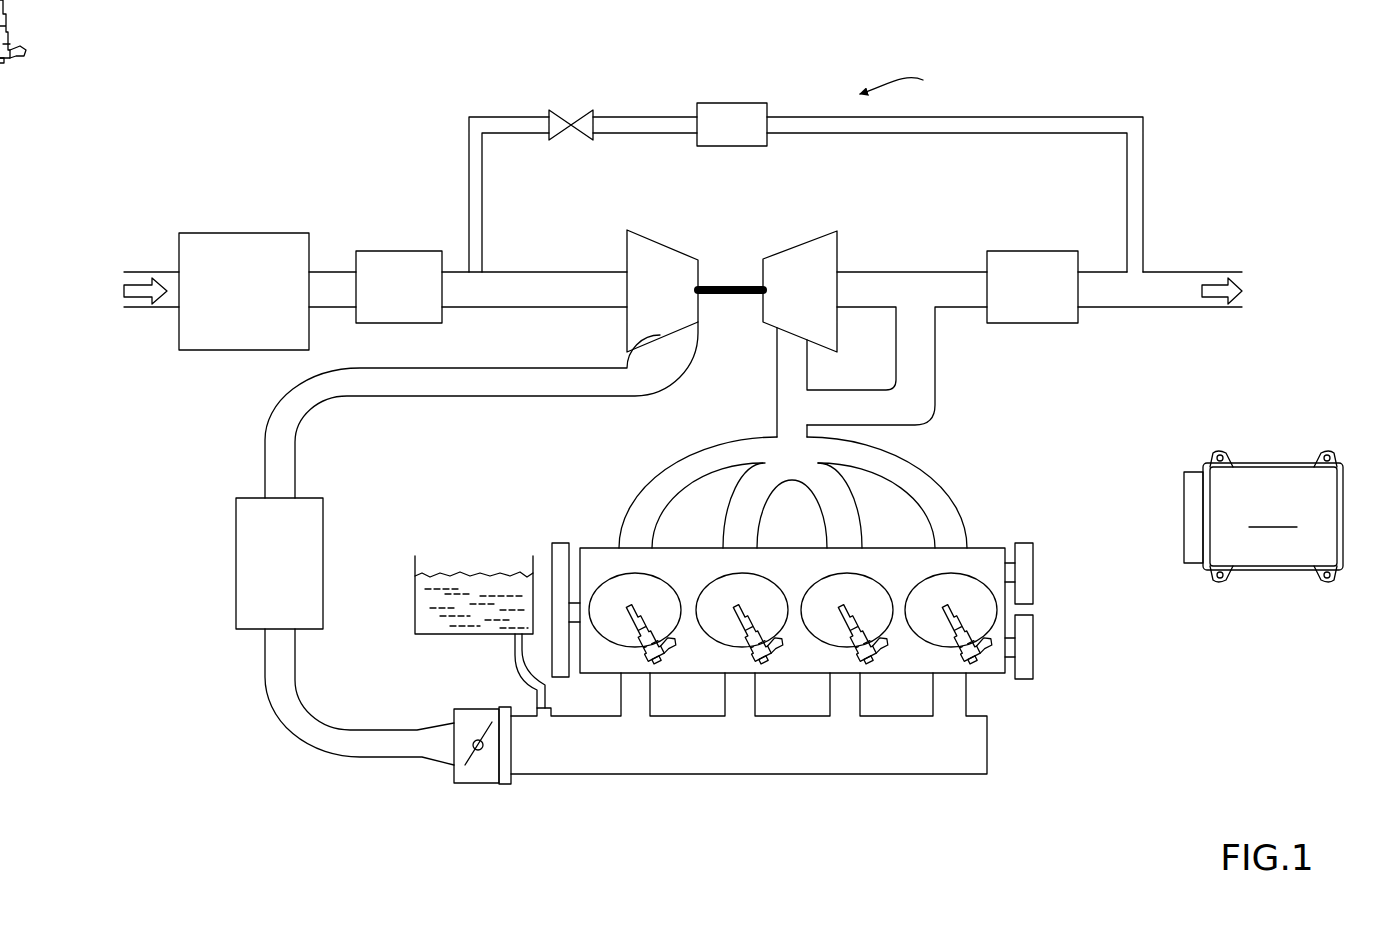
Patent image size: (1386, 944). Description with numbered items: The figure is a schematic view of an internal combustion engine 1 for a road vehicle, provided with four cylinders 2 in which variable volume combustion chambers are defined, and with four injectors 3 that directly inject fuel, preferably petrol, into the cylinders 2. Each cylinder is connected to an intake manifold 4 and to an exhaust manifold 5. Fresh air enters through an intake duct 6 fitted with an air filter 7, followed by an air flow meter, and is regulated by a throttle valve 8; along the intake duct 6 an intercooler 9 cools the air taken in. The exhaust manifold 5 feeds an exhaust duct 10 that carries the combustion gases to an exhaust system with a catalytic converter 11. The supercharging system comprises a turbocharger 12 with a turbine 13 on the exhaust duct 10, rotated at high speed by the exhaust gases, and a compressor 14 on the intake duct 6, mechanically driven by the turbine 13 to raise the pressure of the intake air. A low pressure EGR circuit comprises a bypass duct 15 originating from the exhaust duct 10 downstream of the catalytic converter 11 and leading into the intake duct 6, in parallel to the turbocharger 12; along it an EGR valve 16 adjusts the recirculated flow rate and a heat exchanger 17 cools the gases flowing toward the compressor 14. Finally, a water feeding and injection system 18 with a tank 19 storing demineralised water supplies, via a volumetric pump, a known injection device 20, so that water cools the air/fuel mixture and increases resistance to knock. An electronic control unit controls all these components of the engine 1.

The internal combustion engine 1 is at (322, 187).
The cylinder 2 is at (645, 613).
The injector 3 is at (967, 670).
The intake manifold 4 is at (744, 755).
The exhaust manifold 5 is at (785, 463).
The intake duct 6 is at (268, 447).
The air filter 7 is at (236, 304).
The throttle valve 8 is at (476, 777).
The intercooler 9 is at (272, 572).
The exhaust duct 10 is at (938, 272).
The catalytic converter 11 is at (1045, 301).
The turbocharger 12 is at (742, 250).
The turbine 13 is at (793, 253).
The compressor 14 is at (650, 243).
The bypass duct 15 is at (1138, 190).
The EGR valve 16 is at (586, 98).
The heat exchanger 17 is at (719, 137).
The water feeding and injection system 18 is at (477, 574).
The tank 19 is at (443, 627).
The injection device 20 is at (516, 687).